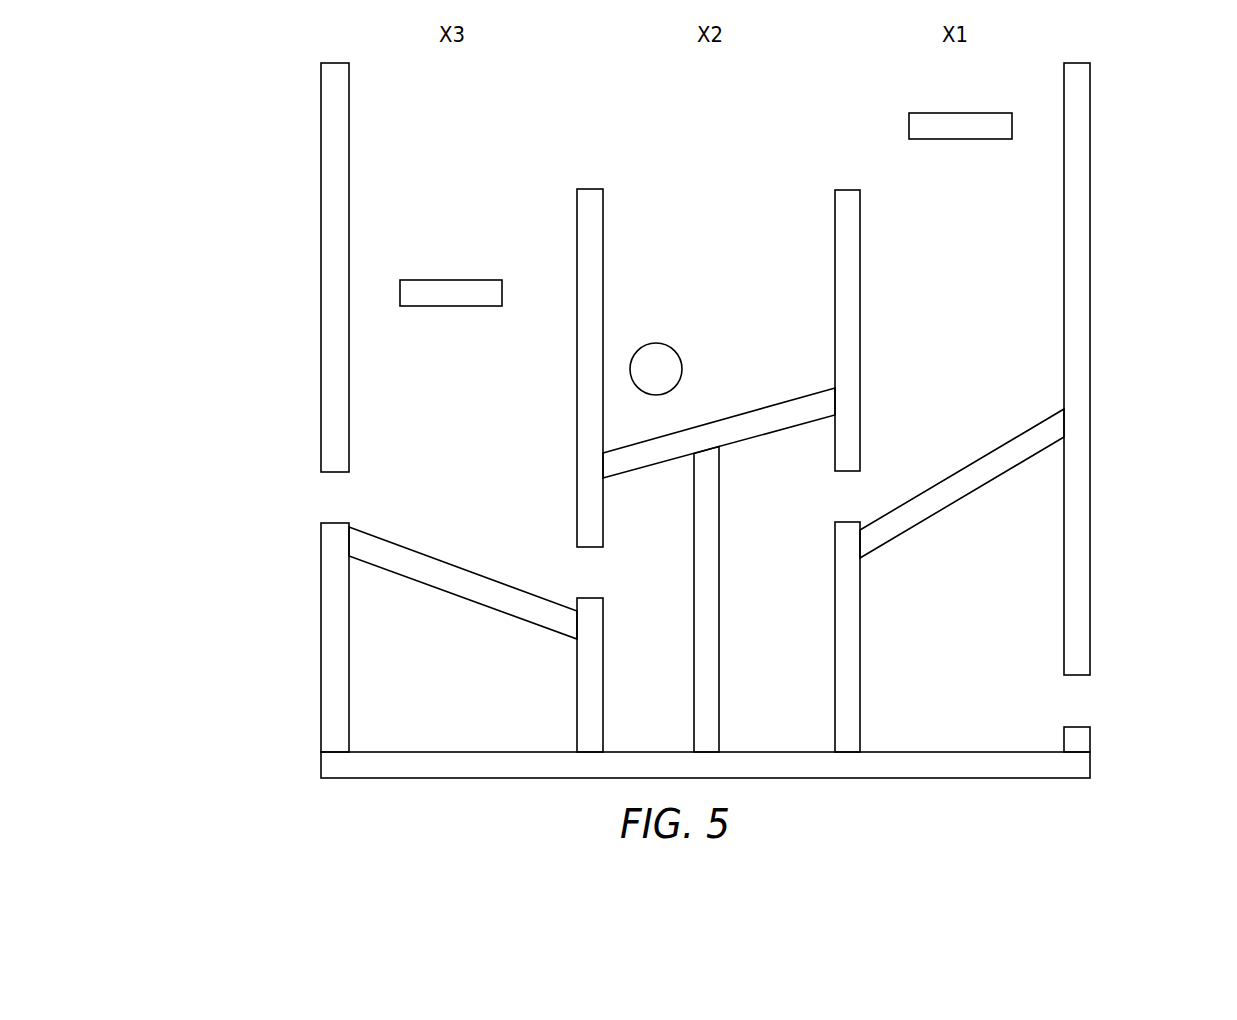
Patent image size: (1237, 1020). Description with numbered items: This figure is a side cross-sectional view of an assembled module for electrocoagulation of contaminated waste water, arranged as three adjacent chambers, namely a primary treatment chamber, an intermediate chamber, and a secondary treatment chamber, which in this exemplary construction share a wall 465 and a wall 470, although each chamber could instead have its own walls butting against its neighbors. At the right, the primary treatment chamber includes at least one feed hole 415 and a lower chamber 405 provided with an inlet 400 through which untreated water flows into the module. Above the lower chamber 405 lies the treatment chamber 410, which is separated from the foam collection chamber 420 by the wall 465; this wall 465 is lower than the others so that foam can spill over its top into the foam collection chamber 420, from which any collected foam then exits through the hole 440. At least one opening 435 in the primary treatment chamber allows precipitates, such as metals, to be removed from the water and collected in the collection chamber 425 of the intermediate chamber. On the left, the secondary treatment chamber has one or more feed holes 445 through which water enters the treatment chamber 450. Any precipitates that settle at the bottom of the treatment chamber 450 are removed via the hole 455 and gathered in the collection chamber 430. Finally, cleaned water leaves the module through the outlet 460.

The inlet 400 is at (1093, 702).
The lower chamber 405 is at (925, 689).
The treatment chamber 410 is at (944, 349).
The feed hole 415 is at (990, 143).
The foam collection chamber 420 is at (712, 222).
The collection chamber 425 is at (755, 665).
The collection chamber 430 is at (639, 665).
The opening 435 is at (863, 492).
The hole 440 is at (719, 409).
The feed hole 445 is at (490, 276).
The treatment chamber 450 is at (448, 427).
The hole 455 is at (585, 573).
The outlet 460 is at (313, 492).
The wall 465 is at (847, 186).
The wall 470 is at (600, 186).